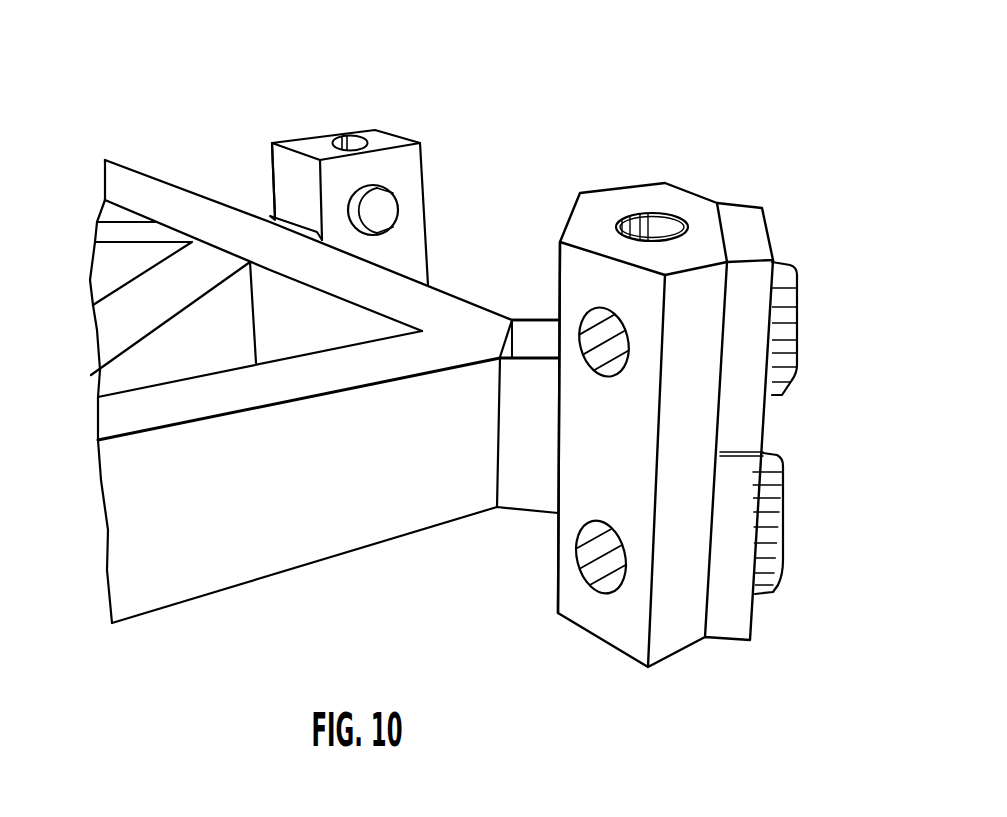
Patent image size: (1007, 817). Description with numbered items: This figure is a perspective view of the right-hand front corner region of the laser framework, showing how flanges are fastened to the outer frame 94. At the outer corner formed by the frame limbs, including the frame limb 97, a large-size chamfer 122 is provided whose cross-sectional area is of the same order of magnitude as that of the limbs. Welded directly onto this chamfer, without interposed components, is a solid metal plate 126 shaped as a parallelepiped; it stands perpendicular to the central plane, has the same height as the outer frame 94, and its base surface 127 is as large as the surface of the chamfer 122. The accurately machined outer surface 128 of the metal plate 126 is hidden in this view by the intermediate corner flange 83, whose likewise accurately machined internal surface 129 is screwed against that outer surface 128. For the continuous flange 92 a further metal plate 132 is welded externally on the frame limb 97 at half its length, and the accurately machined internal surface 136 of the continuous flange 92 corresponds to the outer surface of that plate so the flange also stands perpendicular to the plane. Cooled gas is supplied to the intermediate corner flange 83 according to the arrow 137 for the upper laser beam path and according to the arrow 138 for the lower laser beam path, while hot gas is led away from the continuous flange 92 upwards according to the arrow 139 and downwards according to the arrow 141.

The intermediate corner flange 83 is at (762, 222).
The continuous flange 92 is at (297, 145).
The outer frame 94 is at (302, 573).
The frame limb 97 is at (172, 203).
The chamfer 122 is at (512, 352).
The metal plate 126 is at (536, 323).
The base surface 127 is at (512, 357).
The outer surface 128 is at (560, 412).
The internal surface 129 is at (553, 257).
The metal plate 132 is at (302, 236).
The internal surface 136 is at (282, 187).
The arrow 137 is at (655, 70).
The arrow 138 is at (635, 687).
The arrow 139 is at (340, 15).
The arrow 141 is at (365, 373).